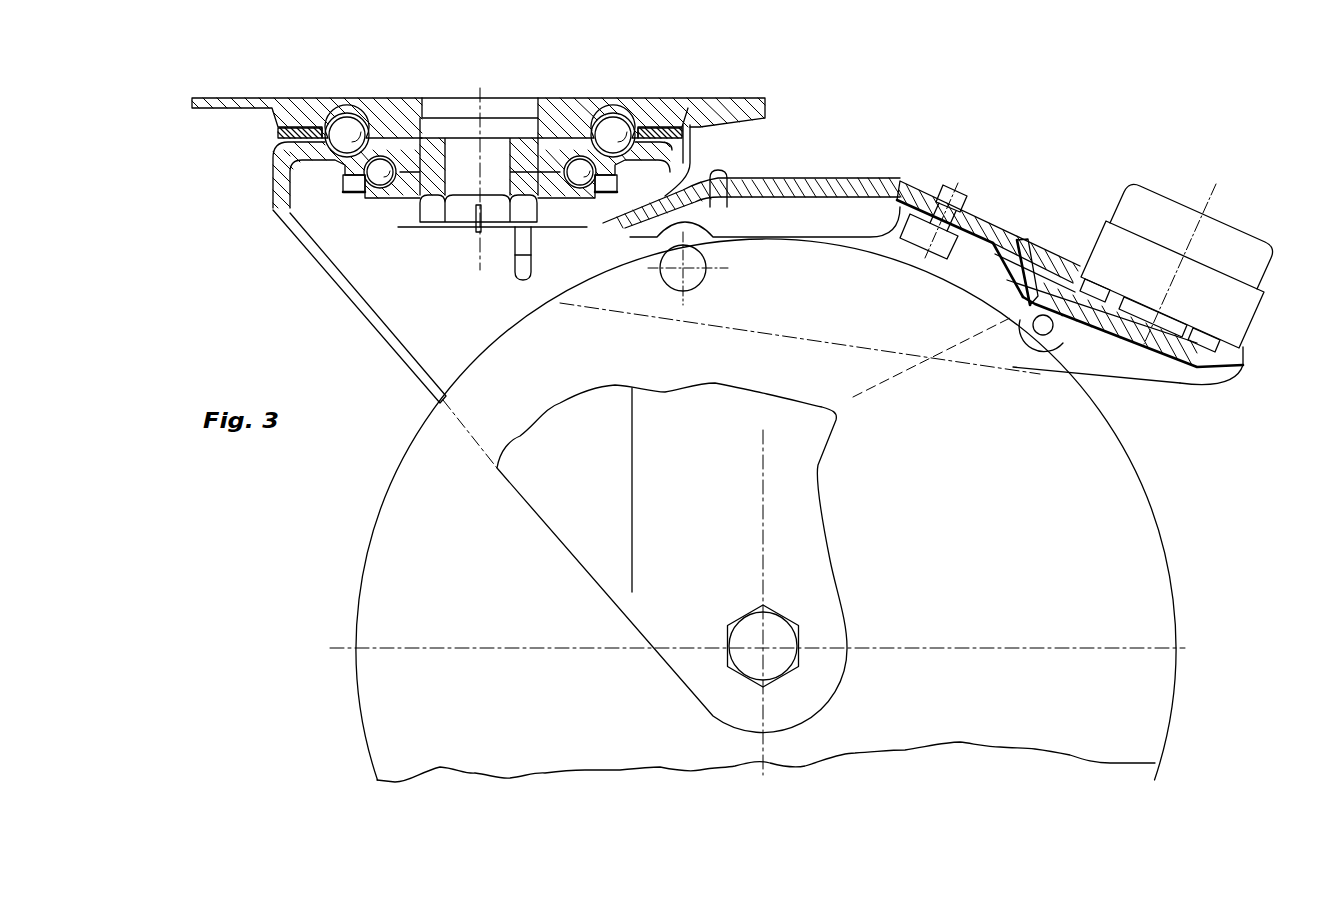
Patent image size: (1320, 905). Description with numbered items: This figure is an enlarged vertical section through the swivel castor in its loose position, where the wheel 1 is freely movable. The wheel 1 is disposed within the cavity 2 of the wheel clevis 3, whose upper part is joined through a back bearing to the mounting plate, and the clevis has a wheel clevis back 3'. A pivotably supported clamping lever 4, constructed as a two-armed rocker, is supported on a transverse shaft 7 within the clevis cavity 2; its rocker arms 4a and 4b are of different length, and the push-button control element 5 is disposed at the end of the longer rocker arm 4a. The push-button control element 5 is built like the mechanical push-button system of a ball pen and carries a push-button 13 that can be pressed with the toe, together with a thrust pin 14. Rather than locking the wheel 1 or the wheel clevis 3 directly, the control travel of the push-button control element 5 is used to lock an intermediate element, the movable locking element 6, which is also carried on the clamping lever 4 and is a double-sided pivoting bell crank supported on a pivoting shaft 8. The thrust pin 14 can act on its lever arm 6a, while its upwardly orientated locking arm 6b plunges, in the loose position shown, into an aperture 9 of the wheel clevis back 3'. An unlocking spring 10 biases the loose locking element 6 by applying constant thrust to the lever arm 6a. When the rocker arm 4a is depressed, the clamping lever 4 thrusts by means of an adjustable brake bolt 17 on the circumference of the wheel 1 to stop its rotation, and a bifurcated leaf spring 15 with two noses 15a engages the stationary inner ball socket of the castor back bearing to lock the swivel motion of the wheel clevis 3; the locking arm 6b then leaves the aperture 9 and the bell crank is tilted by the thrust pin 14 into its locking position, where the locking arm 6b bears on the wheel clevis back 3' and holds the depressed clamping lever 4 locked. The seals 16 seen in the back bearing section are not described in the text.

The wheel 1 is at (1128, 545).
The cavity 2 is at (455, 260).
The wheel clevis 3 is at (359, 306).
The wheel clevis back 3' is at (752, 175).
The clamping lever 4 is at (985, 368).
The rocker arm 4a is at (1190, 382).
The rocker arm 4b is at (547, 279).
The push-button control element 5 is at (1225, 316).
The locking element 6 is at (1100, 336).
The lever arm 6a is at (1155, 356).
The locking arm 6b is at (1033, 247).
The transverse shaft 7 is at (695, 278).
The pivoting shaft 8 is at (1043, 336).
The aperture 9 is at (1019, 238).
The unlocking spring 10 is at (1005, 277).
The push-button 13 is at (1170, 216).
The thrust pin 14 is at (1140, 346).
The bifurcated leaf spring 15 is at (617, 205).
The noses 15a is at (470, 214).
The seals 16 is at (360, 192).
The adjustable brake bolt 17 is at (915, 243).